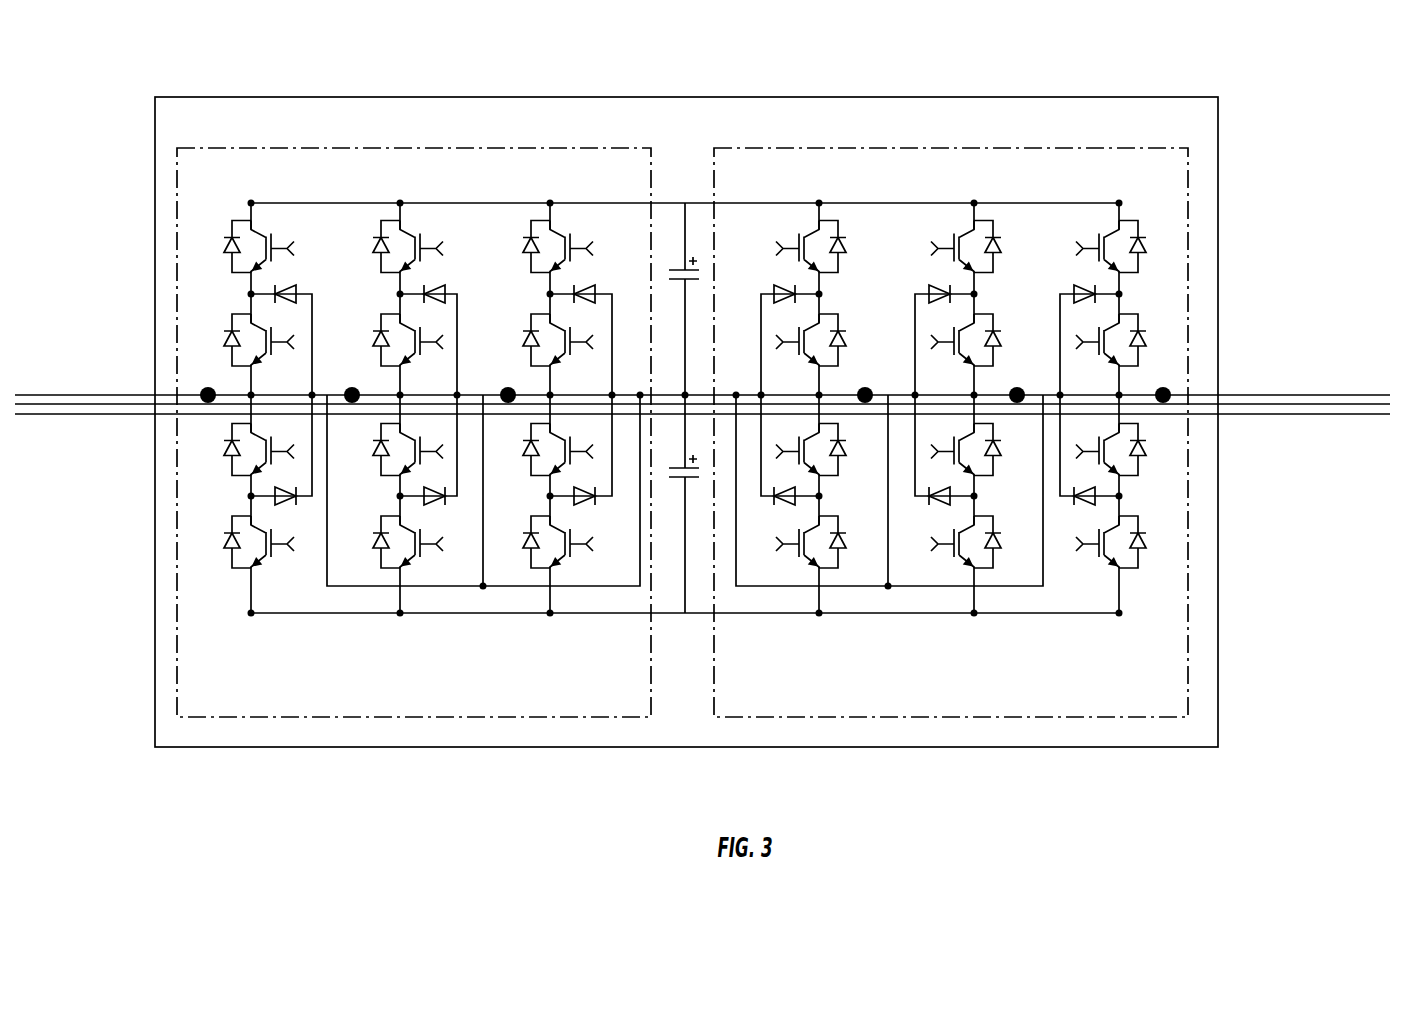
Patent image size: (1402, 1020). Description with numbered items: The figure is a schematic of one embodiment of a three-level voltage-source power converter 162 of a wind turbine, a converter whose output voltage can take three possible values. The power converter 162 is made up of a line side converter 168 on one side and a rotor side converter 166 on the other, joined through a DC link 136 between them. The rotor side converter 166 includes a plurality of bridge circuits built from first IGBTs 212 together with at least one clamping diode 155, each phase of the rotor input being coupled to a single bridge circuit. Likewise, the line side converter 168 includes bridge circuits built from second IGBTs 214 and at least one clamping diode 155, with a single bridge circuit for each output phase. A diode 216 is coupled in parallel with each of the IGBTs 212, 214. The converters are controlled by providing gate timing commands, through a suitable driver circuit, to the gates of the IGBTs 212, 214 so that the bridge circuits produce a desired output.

The clamping diode 155 is at (775, 290).
The DC link 136 is at (663, 202).
The power converter 162 is at (783, 107).
The line side converter 168 is at (520, 148).
The rotor side converter 166 is at (1082, 148).
The first IGBTs 212 is at (814, 232).
The second IGBTs 214 is at (256, 232).
The diode 216 is at (222, 250).